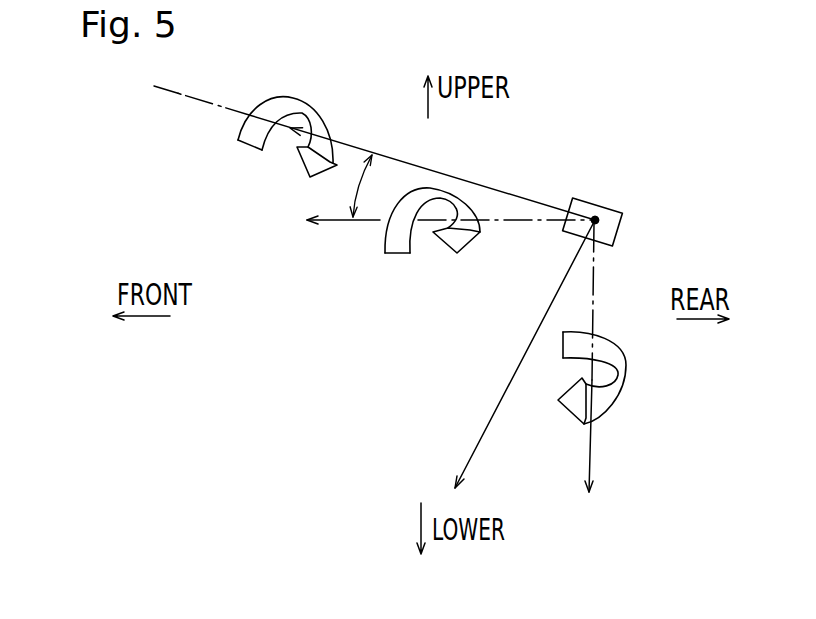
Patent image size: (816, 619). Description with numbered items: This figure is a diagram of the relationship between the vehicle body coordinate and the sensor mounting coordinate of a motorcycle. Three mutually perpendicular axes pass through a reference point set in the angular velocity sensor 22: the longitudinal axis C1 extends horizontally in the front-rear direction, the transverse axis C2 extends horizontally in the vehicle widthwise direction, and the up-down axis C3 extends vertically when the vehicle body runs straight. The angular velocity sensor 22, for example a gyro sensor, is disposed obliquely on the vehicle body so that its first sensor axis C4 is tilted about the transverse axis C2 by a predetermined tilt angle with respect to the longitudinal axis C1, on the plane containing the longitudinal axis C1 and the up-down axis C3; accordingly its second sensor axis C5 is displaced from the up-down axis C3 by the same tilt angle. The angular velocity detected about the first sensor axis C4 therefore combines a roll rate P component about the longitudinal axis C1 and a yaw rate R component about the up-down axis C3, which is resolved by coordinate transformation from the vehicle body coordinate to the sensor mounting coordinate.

The angular velocity sensor 22 is at (578, 197).
The longitudinal axis C1 is at (337, 225).
The transverse axis C2 is at (596, 219).
The up-down axis C3 is at (592, 458).
The first sensor axis C4 is at (177, 94).
The second sensor axis C5 is at (503, 395).
The roll rate P is at (397, 233).
The yaw rate R is at (567, 404).